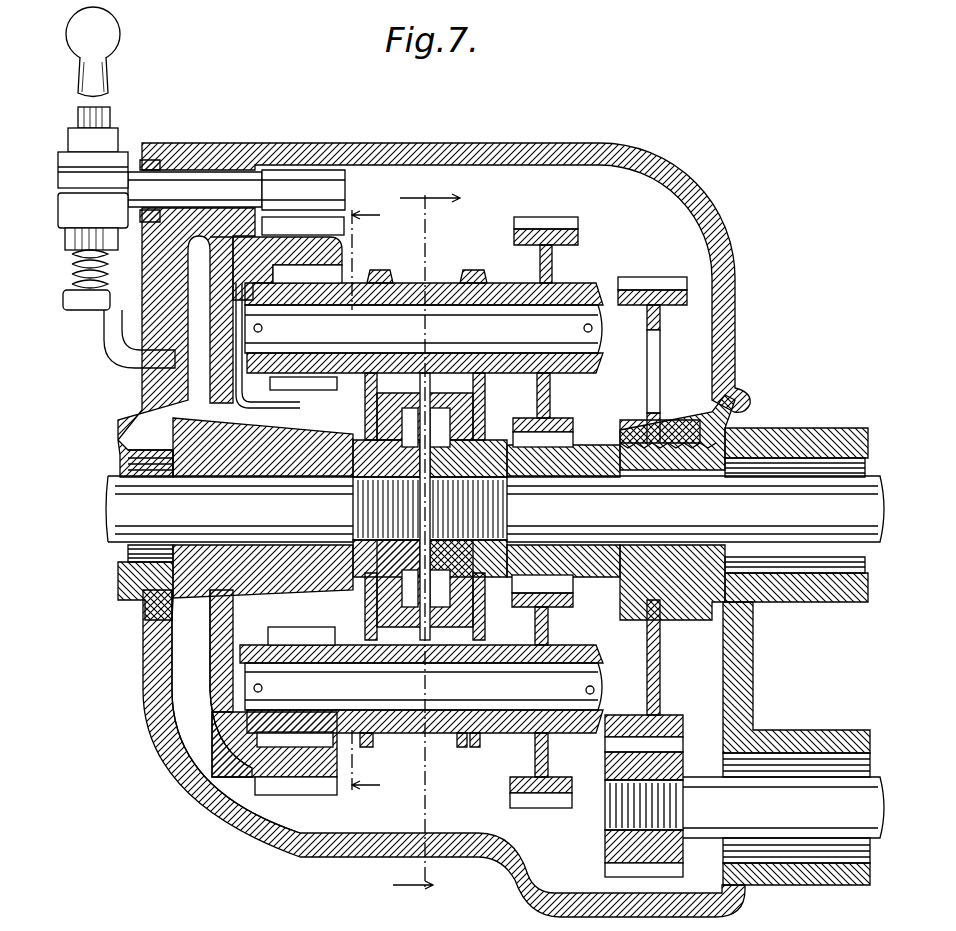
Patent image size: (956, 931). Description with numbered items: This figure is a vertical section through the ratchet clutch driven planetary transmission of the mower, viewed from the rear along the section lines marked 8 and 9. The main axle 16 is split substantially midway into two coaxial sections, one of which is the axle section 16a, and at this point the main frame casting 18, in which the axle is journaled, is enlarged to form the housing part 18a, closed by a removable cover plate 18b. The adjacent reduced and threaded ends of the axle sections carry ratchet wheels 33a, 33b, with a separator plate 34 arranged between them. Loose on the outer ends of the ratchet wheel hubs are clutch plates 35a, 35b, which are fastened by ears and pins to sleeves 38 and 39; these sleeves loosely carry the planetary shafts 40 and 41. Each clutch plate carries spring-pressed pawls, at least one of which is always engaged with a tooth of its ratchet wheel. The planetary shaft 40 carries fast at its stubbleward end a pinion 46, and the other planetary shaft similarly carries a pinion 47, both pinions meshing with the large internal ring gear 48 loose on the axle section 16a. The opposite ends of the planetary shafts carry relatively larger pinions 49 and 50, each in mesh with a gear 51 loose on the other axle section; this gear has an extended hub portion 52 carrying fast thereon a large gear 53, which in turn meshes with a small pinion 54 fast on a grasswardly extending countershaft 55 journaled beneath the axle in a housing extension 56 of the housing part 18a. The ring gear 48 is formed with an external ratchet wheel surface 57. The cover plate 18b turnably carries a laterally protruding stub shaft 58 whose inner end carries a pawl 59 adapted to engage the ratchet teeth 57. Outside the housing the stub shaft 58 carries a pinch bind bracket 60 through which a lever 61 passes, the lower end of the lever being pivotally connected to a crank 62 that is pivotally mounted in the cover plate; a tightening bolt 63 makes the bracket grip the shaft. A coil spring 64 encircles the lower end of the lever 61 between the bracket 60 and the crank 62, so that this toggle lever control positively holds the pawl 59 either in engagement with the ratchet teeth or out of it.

The section line 8— 8 is at (411, 538).
The section line 9— 9 is at (377, 503).
The main axle 16 is at (880, 560).
The axle section 16a is at (112, 540).
The main frame casting 18 is at (805, 428).
The enlarged housing part 18a is at (245, 835).
The removable cover plate 18b is at (545, 143).
The ratchet wheel 33a is at (340, 478).
The ratchet wheel 33b is at (510, 470).
The separator plate 34 is at (400, 592).
The clutch plate 35a is at (365, 400).
The clutch plate 35b is at (487, 435).
The sleeve 38 is at (430, 283).
The sleeve 39 is at (433, 735).
The planetary shaft 40 is at (592, 330).
The planetary shaft 41 is at (594, 692).
The pinion 46 is at (302, 390).
The pinion 47 is at (280, 627).
The internal ring gear 48 is at (240, 760).
The pinion 49 is at (578, 240).
The pinion 50 is at (535, 808).
The gear 51 is at (548, 610).
The extended hub portion 52 is at (645, 578).
The large gear 53 is at (660, 700).
The small pinion 54 is at (665, 765).
The countershaft 55 is at (872, 770).
The housing extension 56 is at (848, 885).
The external ratchet wheel surface 57 is at (310, 795).
The stub shaft 58 is at (220, 175).
The pawl 59 is at (315, 185).
The pinch bind bracket 60 is at (58, 172).
The lever 61 is at (110, 108).
The crank 62 is at (110, 340).
The tightening bolt 63 is at (118, 135).
The coil spring 64 is at (72, 270).